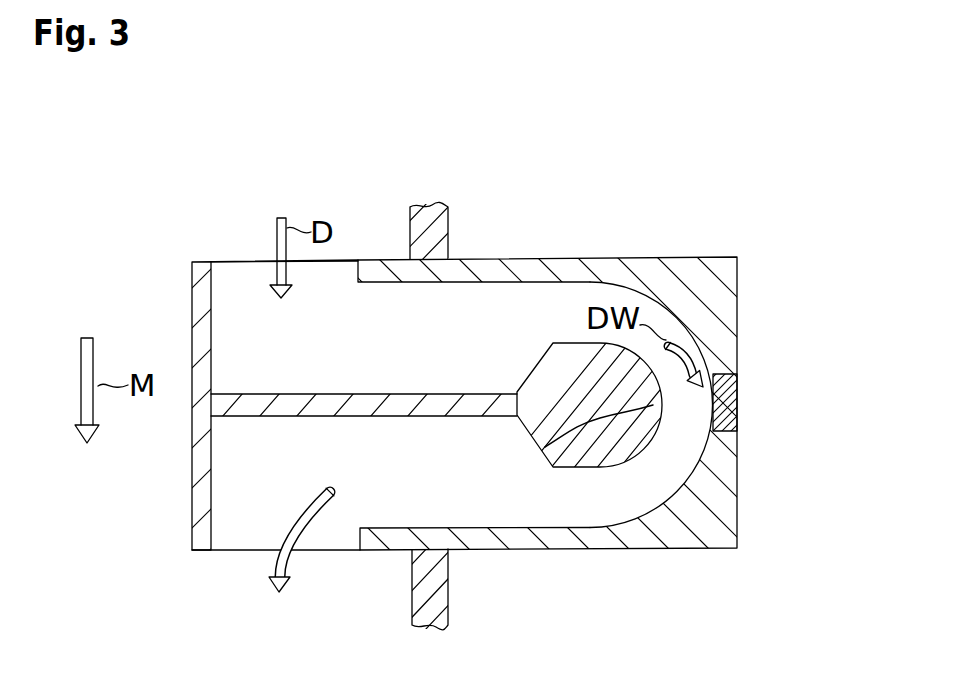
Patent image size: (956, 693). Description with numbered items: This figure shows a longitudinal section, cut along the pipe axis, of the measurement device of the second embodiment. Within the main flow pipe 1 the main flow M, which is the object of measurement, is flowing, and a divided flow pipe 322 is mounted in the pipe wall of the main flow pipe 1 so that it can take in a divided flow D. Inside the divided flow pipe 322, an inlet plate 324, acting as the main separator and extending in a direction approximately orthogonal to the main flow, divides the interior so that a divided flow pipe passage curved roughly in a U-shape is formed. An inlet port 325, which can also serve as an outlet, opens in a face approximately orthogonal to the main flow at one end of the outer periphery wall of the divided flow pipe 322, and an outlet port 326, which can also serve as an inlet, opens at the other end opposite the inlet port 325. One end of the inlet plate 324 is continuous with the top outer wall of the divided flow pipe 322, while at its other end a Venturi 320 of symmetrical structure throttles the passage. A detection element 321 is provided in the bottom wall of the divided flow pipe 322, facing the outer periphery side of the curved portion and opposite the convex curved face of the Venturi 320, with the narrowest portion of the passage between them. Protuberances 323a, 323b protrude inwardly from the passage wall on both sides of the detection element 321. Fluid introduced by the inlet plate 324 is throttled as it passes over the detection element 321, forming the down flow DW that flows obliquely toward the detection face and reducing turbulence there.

The main flow pipe 1 is at (443, 590).
The Venturi 320 is at (550, 457).
The detection element 321 is at (737, 405).
The divided flow pipe 322 is at (515, 240).
The protuberance 323a is at (705, 345).
The protuberance 323b is at (710, 463).
The inlet plate 324 is at (383, 394).
The inlet port 325 is at (238, 262).
The outlet port 326 is at (236, 553).